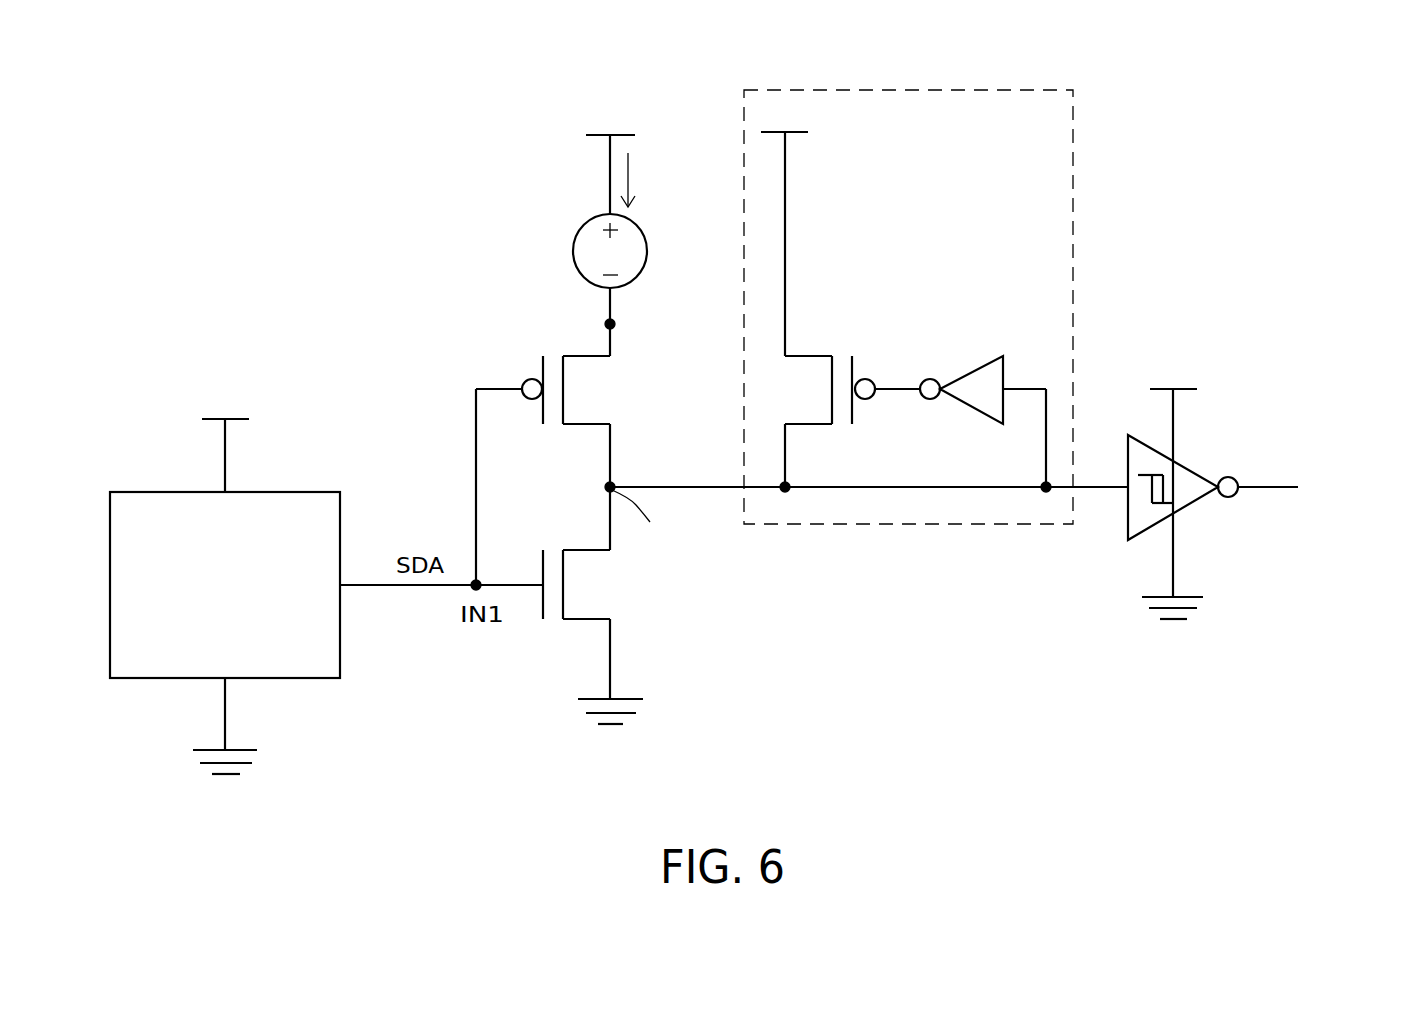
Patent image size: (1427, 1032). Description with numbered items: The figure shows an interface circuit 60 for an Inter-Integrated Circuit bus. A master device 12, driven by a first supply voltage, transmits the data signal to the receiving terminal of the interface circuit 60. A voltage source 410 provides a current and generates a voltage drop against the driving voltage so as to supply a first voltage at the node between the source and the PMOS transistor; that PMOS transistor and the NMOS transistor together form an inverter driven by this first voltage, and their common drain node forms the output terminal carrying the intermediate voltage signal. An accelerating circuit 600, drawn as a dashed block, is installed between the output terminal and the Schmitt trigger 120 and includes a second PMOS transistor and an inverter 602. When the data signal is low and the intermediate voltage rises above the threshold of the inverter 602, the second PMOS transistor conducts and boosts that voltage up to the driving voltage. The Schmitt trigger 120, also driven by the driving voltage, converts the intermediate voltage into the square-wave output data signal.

The master device 12 is at (133, 492).
The interface circuit 60 is at (1185, 194).
The voltage source 410 is at (574, 251).
The accelerating circuit 600 is at (923, 335).
The inverter 602 is at (972, 365).
The Schmitt trigger 120 is at (1190, 470).